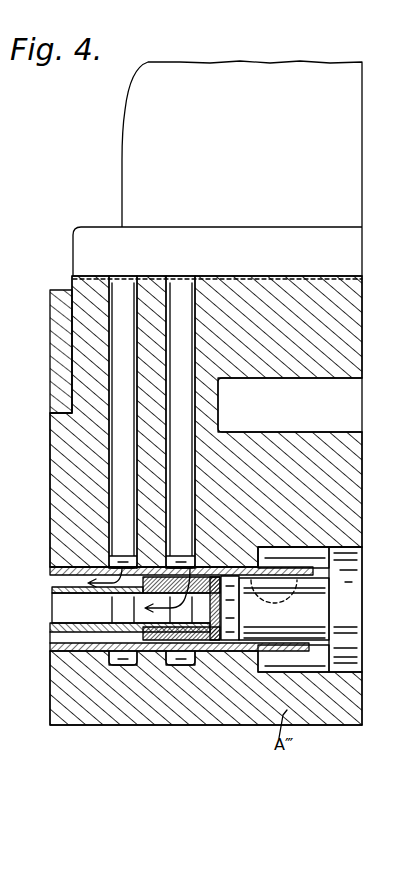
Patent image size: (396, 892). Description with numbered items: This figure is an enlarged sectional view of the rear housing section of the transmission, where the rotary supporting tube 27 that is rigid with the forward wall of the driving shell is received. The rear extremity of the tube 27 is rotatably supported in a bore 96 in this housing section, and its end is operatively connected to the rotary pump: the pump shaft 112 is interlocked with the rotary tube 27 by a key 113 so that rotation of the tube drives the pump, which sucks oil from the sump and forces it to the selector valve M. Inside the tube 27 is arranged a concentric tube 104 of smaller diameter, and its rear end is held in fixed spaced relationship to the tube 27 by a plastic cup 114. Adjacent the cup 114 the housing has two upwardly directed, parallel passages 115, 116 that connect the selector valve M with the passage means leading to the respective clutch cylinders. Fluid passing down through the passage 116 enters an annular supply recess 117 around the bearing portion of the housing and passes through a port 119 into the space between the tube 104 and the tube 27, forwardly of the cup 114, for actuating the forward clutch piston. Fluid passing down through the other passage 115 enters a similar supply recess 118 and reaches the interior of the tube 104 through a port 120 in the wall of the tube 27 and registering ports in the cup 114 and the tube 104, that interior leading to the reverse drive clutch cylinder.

The selector valve M is at (138, 128).
The passage 116 is at (123, 292).
The passage 115 is at (185, 292).
The annular supply recess 117 is at (110, 565).
The port 119 is at (124, 590).
The tube 104 is at (60, 631).
The supporting tube 27 is at (68, 648).
The bore 96 is at (88, 648).
The annular supply recess 118 is at (182, 665).
The port 120 is at (258, 568).
The plastic cup 114 is at (223, 610).
The key 113 is at (284, 609).
The pump shaft 112 is at (322, 615).